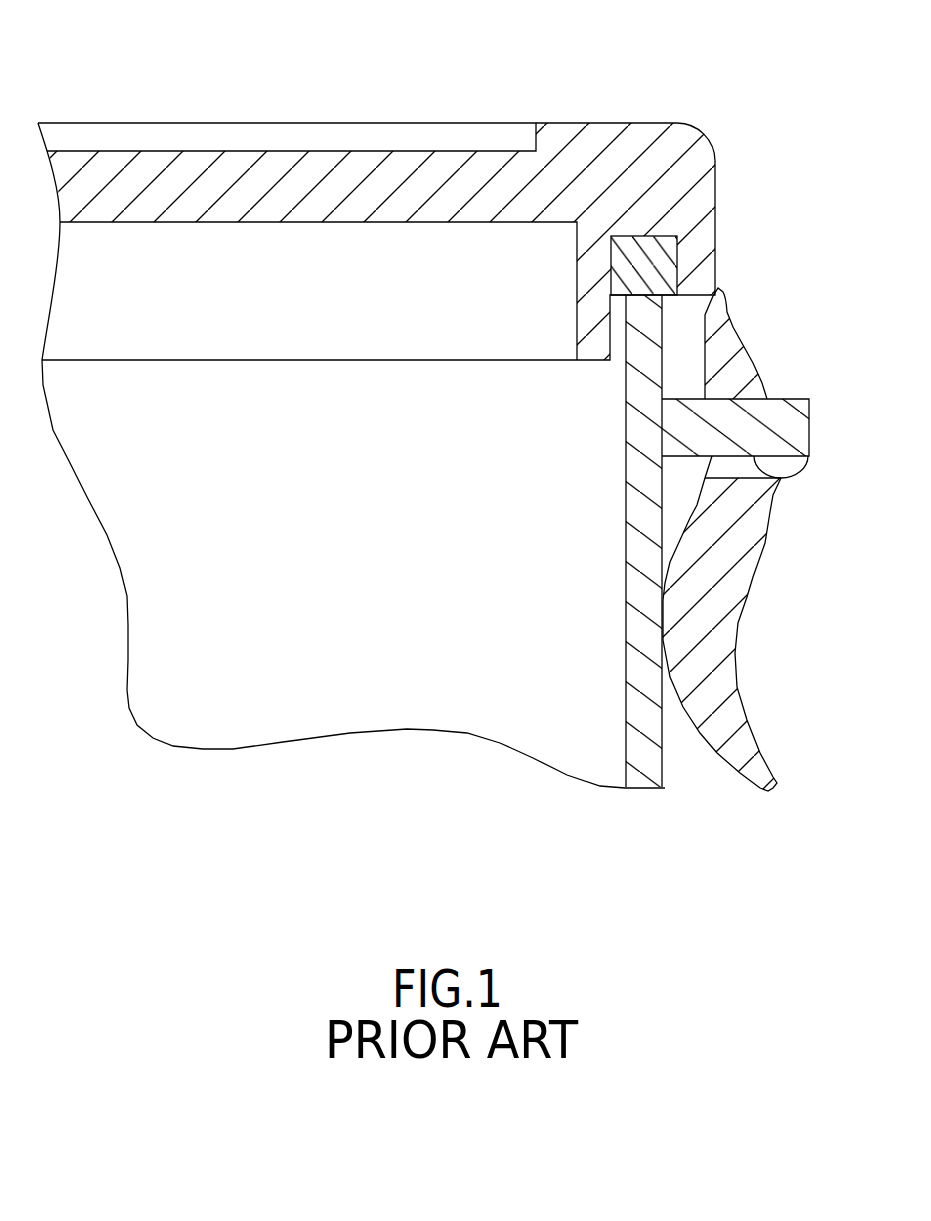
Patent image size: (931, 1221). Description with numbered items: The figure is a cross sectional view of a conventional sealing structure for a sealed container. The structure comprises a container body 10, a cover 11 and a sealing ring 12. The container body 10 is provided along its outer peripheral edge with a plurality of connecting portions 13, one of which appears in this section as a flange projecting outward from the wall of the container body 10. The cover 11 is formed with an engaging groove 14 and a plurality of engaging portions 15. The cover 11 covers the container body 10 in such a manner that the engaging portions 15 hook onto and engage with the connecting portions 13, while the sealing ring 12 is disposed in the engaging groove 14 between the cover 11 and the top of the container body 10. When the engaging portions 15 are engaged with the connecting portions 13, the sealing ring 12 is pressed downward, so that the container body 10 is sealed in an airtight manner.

The container body 10 is at (652, 723).
The cover 11 is at (551, 140).
The sealing ring 12 is at (663, 273).
The connecting portions 13 is at (785, 425).
The engaging groove 14 is at (645, 235).
The engaging portions 15 is at (728, 675).